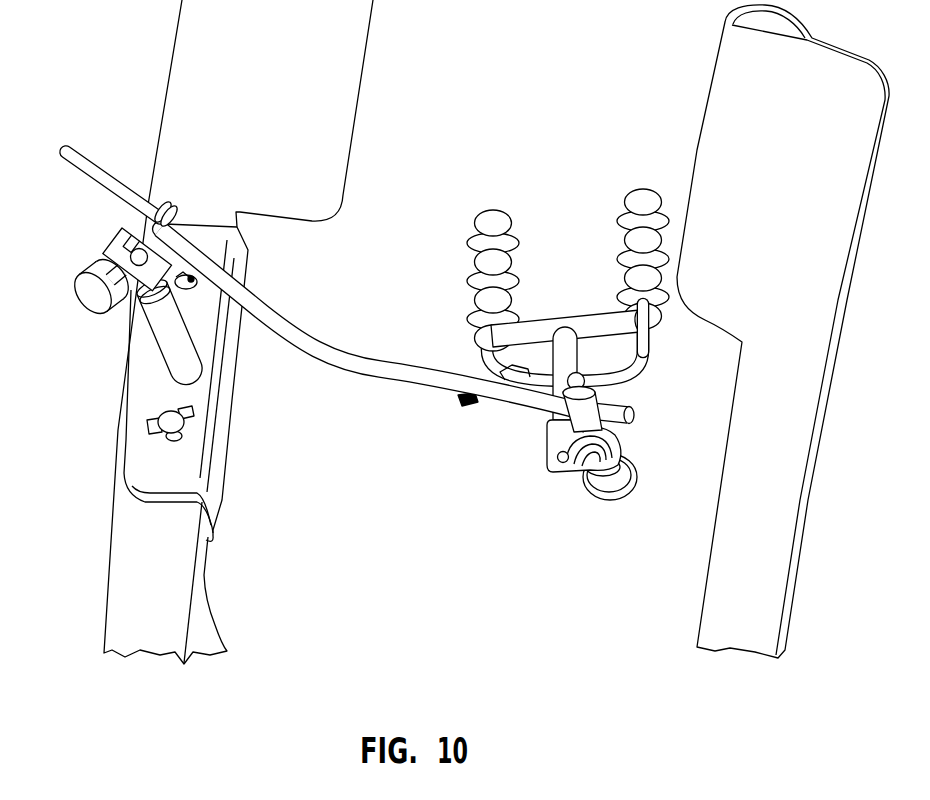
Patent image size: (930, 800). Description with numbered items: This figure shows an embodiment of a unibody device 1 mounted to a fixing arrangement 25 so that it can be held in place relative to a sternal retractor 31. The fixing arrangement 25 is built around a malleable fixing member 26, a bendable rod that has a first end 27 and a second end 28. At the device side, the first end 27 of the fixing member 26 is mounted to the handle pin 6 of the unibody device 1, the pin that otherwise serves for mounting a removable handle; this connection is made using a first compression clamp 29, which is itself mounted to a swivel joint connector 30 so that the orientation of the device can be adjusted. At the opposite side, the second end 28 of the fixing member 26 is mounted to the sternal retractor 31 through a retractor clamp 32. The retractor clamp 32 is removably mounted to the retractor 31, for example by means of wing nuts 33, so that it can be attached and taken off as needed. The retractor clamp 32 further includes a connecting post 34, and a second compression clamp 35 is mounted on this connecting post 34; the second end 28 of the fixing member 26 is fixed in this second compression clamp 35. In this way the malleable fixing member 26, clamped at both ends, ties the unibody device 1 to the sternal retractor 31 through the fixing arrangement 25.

The unibody device 1 is at (653, 358).
The handle pin 6 is at (563, 465).
The fixing arrangement 25 is at (394, 388).
The malleable fixing member 26 is at (376, 359).
The first end 27 is at (527, 407).
The second end 28 is at (67, 164).
The first compression clamp 29 is at (623, 440).
The swivel joint connector 30 is at (617, 500).
The sternal retractor 31 is at (208, 602).
The retractor clamp 32 is at (226, 493).
The wing nuts 33 is at (200, 282).
The connecting post 34 is at (155, 332).
The second compression clamp 35 is at (100, 254).